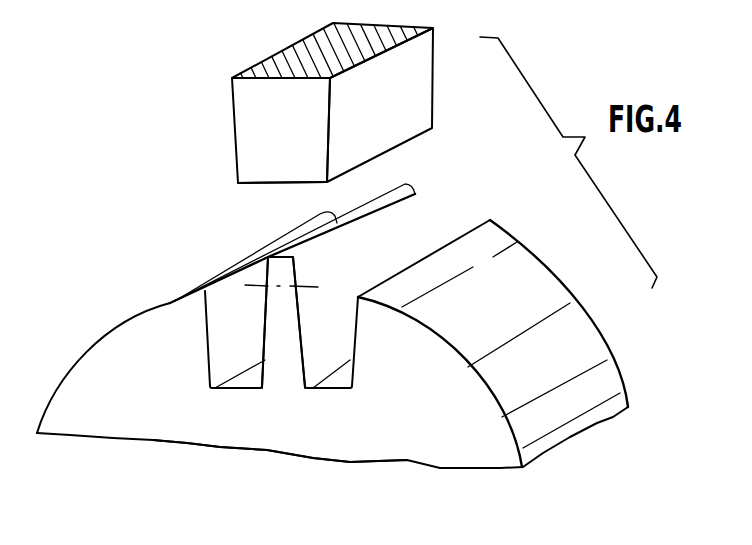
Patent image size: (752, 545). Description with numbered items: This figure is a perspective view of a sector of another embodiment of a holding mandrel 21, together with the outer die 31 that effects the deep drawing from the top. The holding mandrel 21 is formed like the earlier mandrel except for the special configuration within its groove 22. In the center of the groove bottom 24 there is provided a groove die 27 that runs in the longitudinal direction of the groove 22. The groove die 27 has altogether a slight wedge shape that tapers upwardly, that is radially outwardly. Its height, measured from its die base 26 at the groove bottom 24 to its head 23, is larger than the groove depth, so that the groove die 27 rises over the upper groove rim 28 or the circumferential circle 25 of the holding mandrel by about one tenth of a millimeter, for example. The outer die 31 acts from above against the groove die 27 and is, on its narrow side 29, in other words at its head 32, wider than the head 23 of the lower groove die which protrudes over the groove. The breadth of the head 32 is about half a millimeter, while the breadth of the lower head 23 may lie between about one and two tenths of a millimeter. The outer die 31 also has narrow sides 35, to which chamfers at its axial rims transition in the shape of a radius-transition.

The holding mandrel 21 is at (332, 342).
The groove 22 is at (245, 337).
The head 23 is at (410, 200).
The groove bottom 24 is at (328, 390).
The circumferential circle 25 is at (485, 398).
The die base 26 is at (278, 377).
The groove die 27 is at (278, 270).
The upper groove rim 28 is at (463, 232).
The narrow side 29 is at (260, 93).
The outer die 31 is at (332, 106).
The head 32 is at (258, 185).
The narrow sides 35 is at (260, 128).